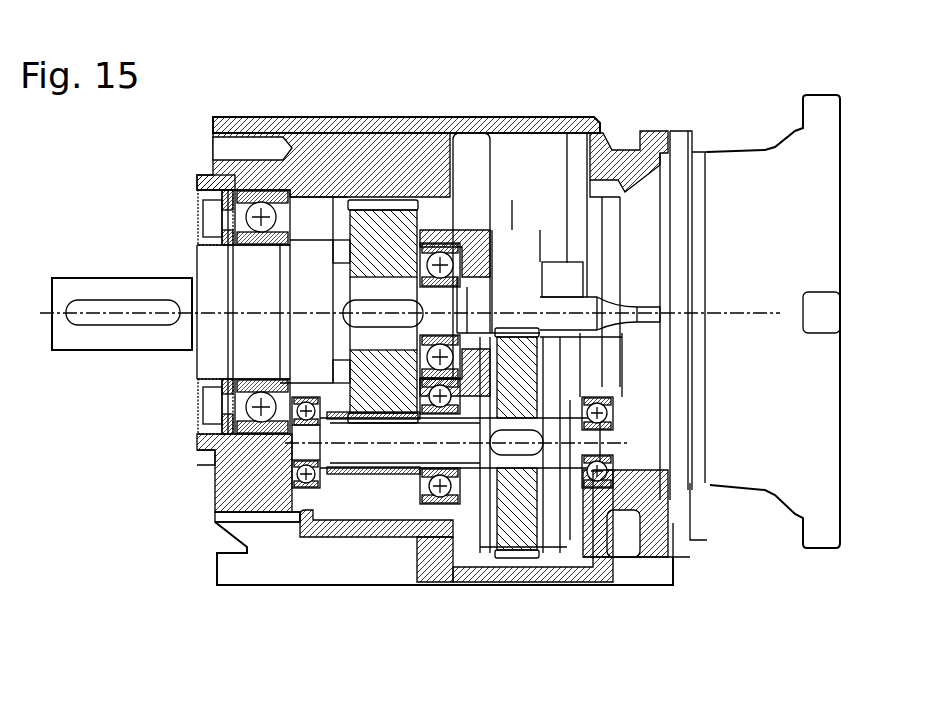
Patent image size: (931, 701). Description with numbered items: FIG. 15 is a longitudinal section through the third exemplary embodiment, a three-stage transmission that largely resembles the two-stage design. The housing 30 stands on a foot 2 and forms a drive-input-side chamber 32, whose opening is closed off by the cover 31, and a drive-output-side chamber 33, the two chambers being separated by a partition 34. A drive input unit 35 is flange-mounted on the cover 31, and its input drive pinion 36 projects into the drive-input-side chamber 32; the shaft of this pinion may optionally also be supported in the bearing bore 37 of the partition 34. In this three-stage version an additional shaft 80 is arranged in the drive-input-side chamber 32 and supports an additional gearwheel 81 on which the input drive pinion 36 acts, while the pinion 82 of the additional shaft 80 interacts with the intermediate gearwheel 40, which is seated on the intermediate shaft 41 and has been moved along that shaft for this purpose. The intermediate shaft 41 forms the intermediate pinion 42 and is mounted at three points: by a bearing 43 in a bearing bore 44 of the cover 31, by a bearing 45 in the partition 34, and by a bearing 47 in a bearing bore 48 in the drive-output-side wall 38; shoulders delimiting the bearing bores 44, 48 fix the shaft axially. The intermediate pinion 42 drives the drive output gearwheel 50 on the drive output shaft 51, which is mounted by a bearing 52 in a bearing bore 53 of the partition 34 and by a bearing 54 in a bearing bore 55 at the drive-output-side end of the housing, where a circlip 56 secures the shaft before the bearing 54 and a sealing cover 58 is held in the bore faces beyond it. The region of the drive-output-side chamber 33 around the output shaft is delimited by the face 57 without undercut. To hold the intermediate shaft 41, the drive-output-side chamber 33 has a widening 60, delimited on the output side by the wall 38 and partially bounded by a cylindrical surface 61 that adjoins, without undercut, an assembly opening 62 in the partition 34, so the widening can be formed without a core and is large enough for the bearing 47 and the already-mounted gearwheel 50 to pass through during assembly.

The foot 2 is at (242, 574).
The housing 30 is at (431, 128).
The cover 31 is at (578, 118).
The drive-input-side chamber 32 is at (513, 153).
The drive-output-side chamber 33 is at (293, 200).
The partition 34 is at (463, 153).
The drive input unit 35 is at (760, 472).
The input drive pinion 36 is at (556, 298).
The bearing bore 37 is at (468, 282).
The drive-output-side wall 38 is at (230, 502).
The intermediate gearwheel 40 is at (515, 560).
The intermediate shaft 41 is at (572, 565).
The intermediate pinion 42 is at (398, 517).
The bearing 43 is at (615, 413).
The bearing bore 44 is at (635, 490).
The bearing 45 is at (436, 558).
The bearing 47 is at (290, 476).
The bearing bore 48 is at (300, 515).
The drive output gearwheel 50 is at (372, 393).
The drive output shaft 51 is at (242, 272).
The bearing 52 is at (480, 289).
The bearing bore 53 is at (448, 240).
The bearing 54 is at (266, 210).
The bearing bore 55 is at (238, 180).
The circlip 56 is at (233, 197).
The face 57 is at (320, 203).
The sealing cover 58 is at (200, 215).
The widening 60 is at (360, 510).
The surface 61 is at (320, 520).
The assembly opening 62 is at (458, 555).
The additional shaft 80 is at (492, 560).
The additional gearwheel 81 is at (575, 349).
The pinion 82 is at (545, 560).